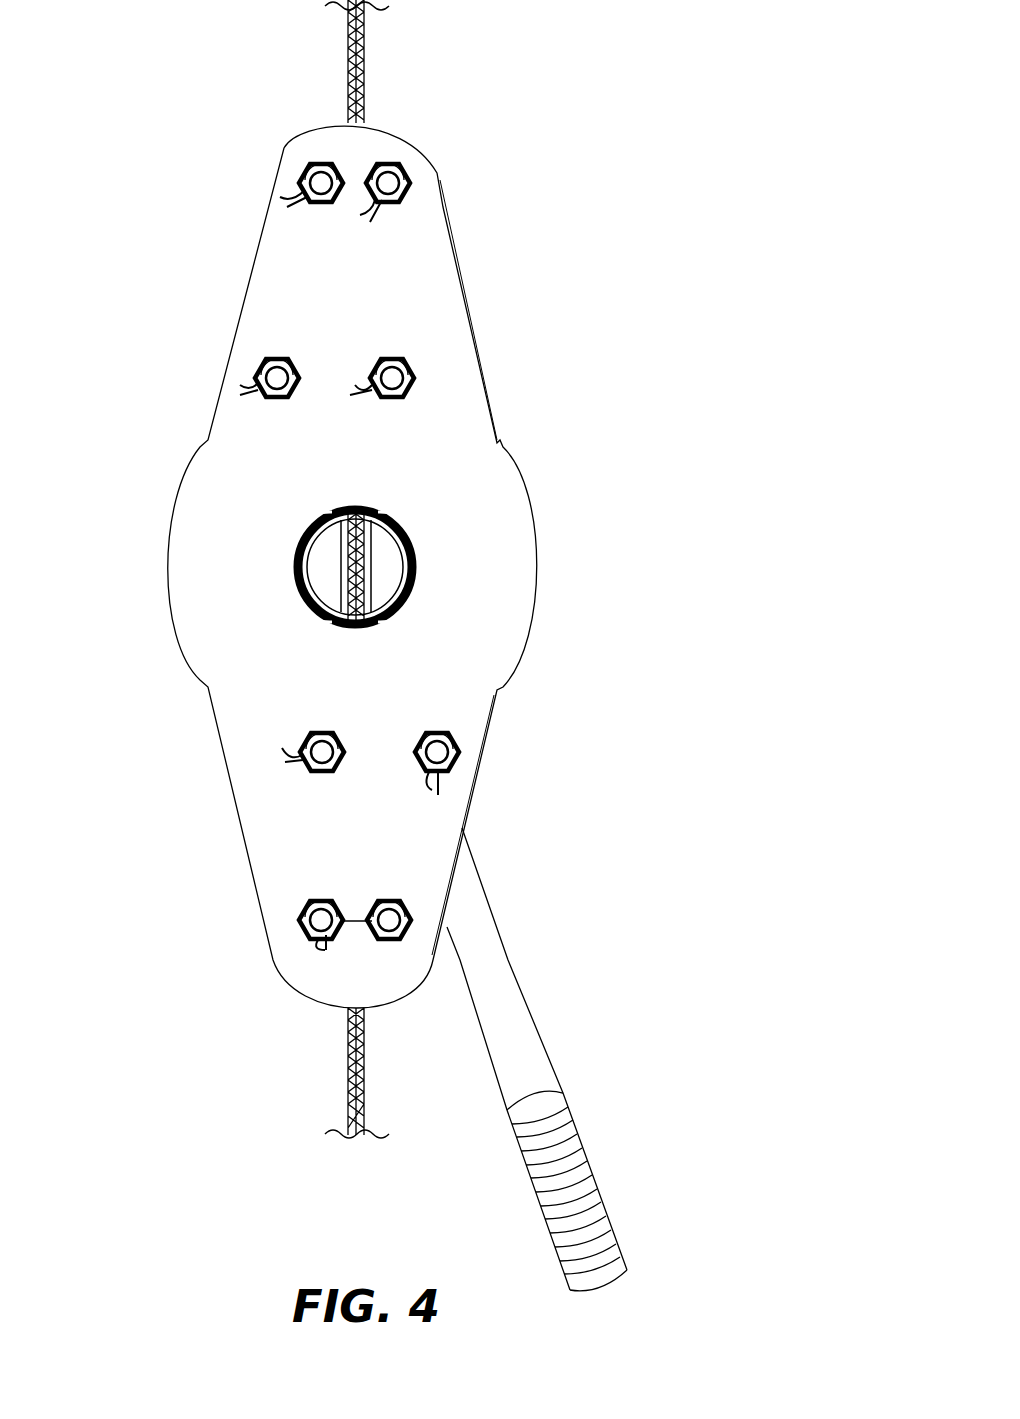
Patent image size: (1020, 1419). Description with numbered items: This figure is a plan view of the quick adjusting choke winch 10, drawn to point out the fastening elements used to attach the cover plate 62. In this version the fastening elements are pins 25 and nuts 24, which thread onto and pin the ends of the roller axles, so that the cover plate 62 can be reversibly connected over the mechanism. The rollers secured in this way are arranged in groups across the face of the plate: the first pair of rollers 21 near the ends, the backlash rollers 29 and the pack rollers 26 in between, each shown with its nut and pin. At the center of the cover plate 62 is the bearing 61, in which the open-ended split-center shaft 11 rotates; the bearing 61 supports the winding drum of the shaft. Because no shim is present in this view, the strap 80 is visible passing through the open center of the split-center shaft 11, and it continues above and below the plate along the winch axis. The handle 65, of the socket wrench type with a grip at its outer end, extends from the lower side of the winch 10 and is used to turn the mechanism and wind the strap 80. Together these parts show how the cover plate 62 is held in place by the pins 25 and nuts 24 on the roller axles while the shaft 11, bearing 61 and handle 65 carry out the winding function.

The quick adjusting choke winch 10 is at (592, 449).
The open-ended split-center shaft 11 is at (375, 567).
The first pair of rollers 21 is at (307, 173).
The nuts 24 is at (395, 357).
The pins 25 is at (367, 395).
The pack rollers 26 is at (397, 377).
The backlash rollers 29 is at (260, 373).
The bearing 61 is at (407, 520).
The cover plate 62 is at (213, 622).
The handle 65 is at (532, 1057).
The strap 80 is at (365, 44).